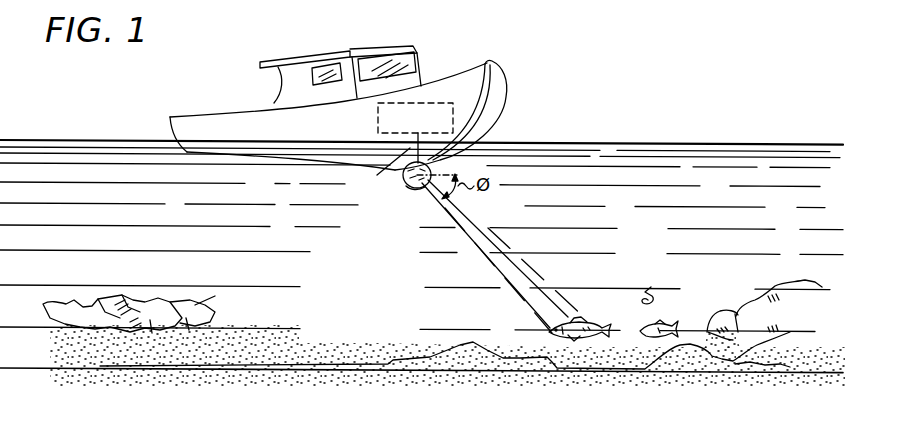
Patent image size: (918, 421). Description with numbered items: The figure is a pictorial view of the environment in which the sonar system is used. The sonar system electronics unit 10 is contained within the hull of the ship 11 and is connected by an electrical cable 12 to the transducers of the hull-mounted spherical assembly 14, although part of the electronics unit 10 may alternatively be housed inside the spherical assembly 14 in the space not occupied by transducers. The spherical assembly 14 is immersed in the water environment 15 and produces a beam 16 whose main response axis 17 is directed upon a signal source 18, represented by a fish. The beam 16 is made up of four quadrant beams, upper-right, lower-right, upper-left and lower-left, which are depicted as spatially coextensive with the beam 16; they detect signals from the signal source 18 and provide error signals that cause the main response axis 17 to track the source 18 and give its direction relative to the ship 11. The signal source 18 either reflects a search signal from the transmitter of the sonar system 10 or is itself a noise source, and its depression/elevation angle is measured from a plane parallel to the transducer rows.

The sonar system electronics unit 10 is at (377, 108).
The ship 11 is at (425, 61).
The electrical cable 12 is at (401, 175).
The hull-mounted spherical assembly 14 is at (404, 186).
The water environment 15 is at (270, 249).
The beam 16 is at (485, 251).
The main response axis 17 is at (473, 221).
The signal source 18 is at (580, 336).